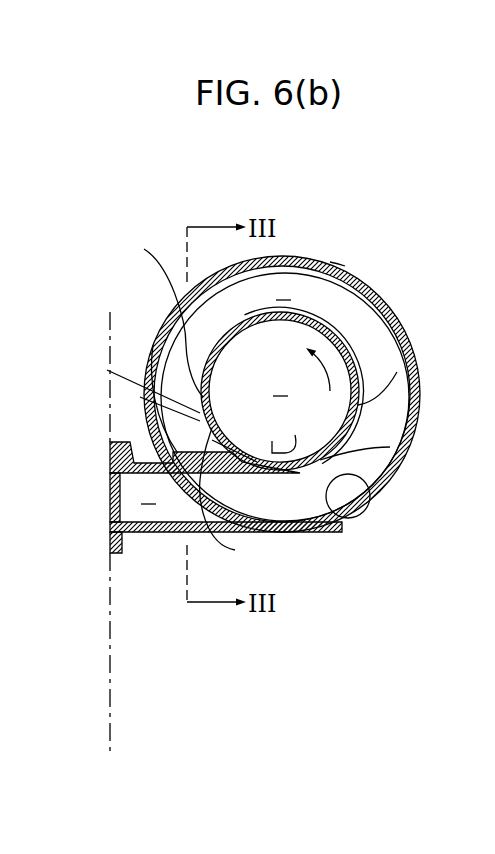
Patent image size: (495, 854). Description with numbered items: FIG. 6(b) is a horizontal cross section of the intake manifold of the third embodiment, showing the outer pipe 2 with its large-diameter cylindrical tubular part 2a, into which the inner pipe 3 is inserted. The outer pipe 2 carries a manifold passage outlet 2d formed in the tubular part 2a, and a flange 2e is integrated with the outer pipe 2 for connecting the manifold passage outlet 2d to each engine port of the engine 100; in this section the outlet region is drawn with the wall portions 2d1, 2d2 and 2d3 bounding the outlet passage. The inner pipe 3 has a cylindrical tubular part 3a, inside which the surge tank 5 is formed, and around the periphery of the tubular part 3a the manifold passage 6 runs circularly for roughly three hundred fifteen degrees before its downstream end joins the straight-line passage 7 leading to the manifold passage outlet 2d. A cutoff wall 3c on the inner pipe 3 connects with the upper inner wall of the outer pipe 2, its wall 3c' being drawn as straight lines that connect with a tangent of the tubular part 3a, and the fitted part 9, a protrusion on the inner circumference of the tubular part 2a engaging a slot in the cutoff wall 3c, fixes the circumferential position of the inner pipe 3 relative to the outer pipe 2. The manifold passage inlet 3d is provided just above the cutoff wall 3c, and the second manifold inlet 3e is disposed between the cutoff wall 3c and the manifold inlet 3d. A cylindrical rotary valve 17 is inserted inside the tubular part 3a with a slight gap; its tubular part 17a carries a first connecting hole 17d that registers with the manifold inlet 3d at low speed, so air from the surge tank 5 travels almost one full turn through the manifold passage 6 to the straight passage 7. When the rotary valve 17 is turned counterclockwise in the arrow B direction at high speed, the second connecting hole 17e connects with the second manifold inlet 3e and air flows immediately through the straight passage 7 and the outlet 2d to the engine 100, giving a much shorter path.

The outer pipe 2 is at (301, 258).
The cylindrical tubular part 2a is at (345, 266).
The manifold passage outlet 2d is at (110, 507).
The bolt hole 2d1 is at (327, 490).
The lower flange wall 2d2 is at (130, 512).
The upper flange wall 2d3 is at (121, 476).
The flange 2e is at (118, 555).
The inner pipe 3 is at (340, 337).
The cylindrical tubular part 3a is at (335, 326).
The cutoff wall 3c is at (230, 495).
The wall of the cutoff wall 3c' is at (259, 472).
The manifold passage inlet 3d is at (107, 370).
The second manifold inlet 3e is at (390, 447).
The surge tank 5 is at (280, 384).
The manifold passage 6 is at (283, 288).
The straight-line passage 7 is at (148, 492).
The fitted part 9 is at (140, 397).
The rotary valve 17 is at (413, 347).
The tubular part 17a is at (150, 385).
The first connecting hole 17d is at (151, 317).
The second connecting hole 17e is at (299, 432).
The engine 100 is at (110, 718).
The arrow B direction B is at (302, 363).